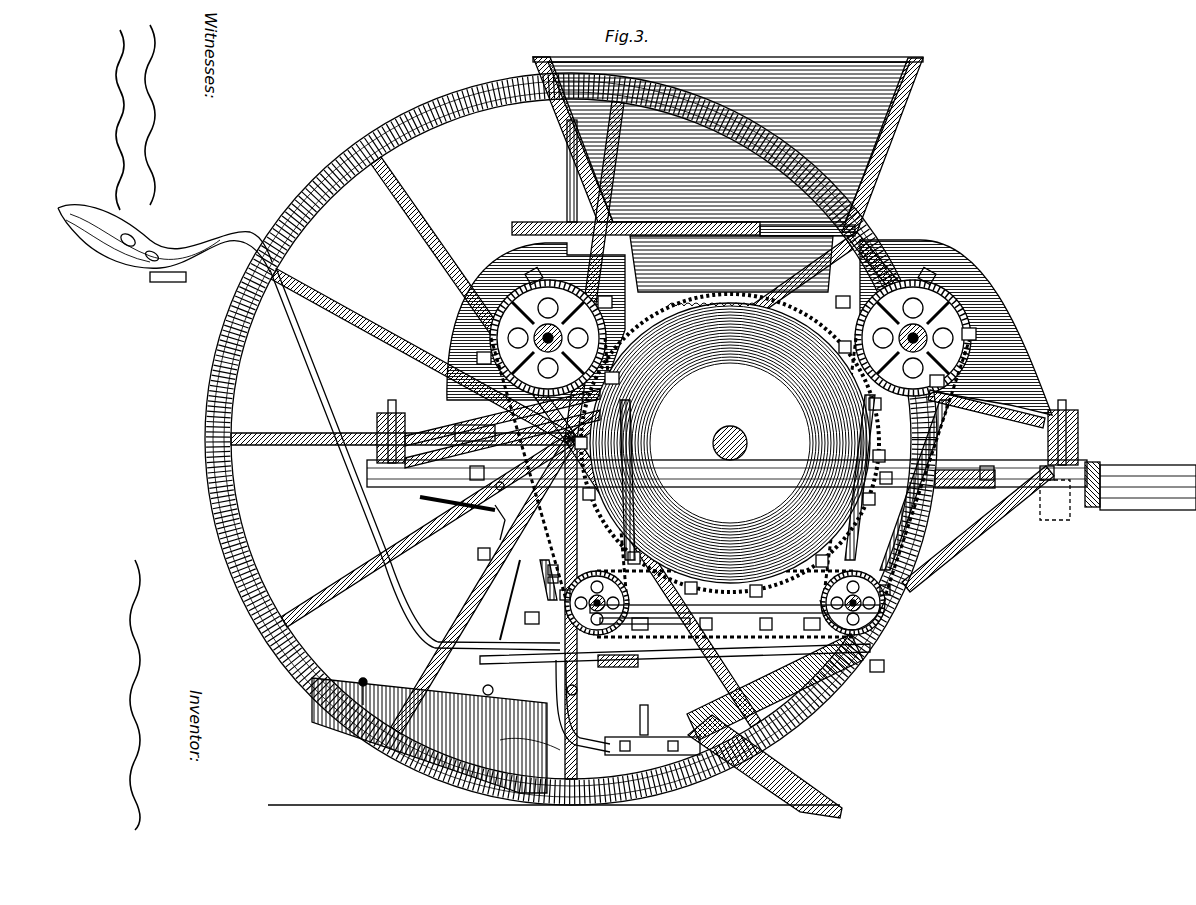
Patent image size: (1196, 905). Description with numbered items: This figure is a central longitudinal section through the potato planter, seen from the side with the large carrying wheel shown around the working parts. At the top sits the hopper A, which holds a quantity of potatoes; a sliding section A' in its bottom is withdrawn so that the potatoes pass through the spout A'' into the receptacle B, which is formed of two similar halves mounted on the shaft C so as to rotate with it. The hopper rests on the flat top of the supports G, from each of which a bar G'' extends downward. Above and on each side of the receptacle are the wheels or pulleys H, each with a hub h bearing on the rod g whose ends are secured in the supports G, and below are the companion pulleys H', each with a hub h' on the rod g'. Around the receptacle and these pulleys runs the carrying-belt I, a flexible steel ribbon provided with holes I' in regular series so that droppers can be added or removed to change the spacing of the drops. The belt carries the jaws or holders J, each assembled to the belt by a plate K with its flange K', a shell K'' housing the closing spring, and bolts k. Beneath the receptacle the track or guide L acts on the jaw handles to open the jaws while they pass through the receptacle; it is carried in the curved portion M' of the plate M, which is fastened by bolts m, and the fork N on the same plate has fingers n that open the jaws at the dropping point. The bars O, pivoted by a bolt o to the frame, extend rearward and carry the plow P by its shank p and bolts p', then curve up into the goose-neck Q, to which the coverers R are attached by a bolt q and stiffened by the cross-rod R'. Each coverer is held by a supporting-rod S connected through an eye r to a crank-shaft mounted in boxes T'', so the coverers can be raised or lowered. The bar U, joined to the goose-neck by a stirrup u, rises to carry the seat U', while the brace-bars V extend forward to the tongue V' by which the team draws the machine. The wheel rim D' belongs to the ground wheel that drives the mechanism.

The hopper A is at (728, 174).
The sliding section A' is at (683, 218).
The spout A'' is at (731, 264).
The receptacle B is at (730, 443).
The shaft C is at (738, 443).
The wheel rim D' is at (571, 439).
The support G is at (728, 338).
The bar G'' is at (853, 648).
The shaft or rod g is at (735, 328).
The rod or shaft g' is at (718, 625).
The wheels or pulleys H is at (740, 325).
The companion wheels or pulleys H' is at (875, 636).
The hub or center h is at (771, 277).
The hub or center h' is at (536, 597).
The carrying-belt I is at (710, 466).
The holes I' is at (616, 548).
The jaws or holders J is at (873, 672).
The plate K is at (727, 428).
The flange or projection K' is at (721, 432).
The shell K'' is at (725, 544).
The bolts k is at (490, 483).
The pin k' is at (899, 611).
The track or guide L is at (730, 473).
The drum chain L' is at (730, 443).
The plate M is at (680, 634).
The curved central portion M' is at (670, 616).
The bolts m is at (727, 628).
The fork N is at (535, 572).
The projecting ends or fingers n is at (536, 586).
The bars O is at (978, 529).
The bolt or pivot o is at (1080, 460).
The plow P is at (775, 726).
The shank p is at (649, 720).
The bolts p' is at (652, 752).
The goose-neck Q is at (588, 706).
The bolt q is at (530, 745).
The coverers R is at (429, 735).
The cross-rod R' is at (363, 677).
The eye r is at (494, 693).
The supporting-rods S is at (508, 600).
The boxes T'' is at (441, 508).
The bars U is at (415, 475).
The seat U' is at (165, 243).
The stirrup u is at (563, 695).
The brace-bars V is at (1075, 440).
The tongue V' is at (1148, 487).